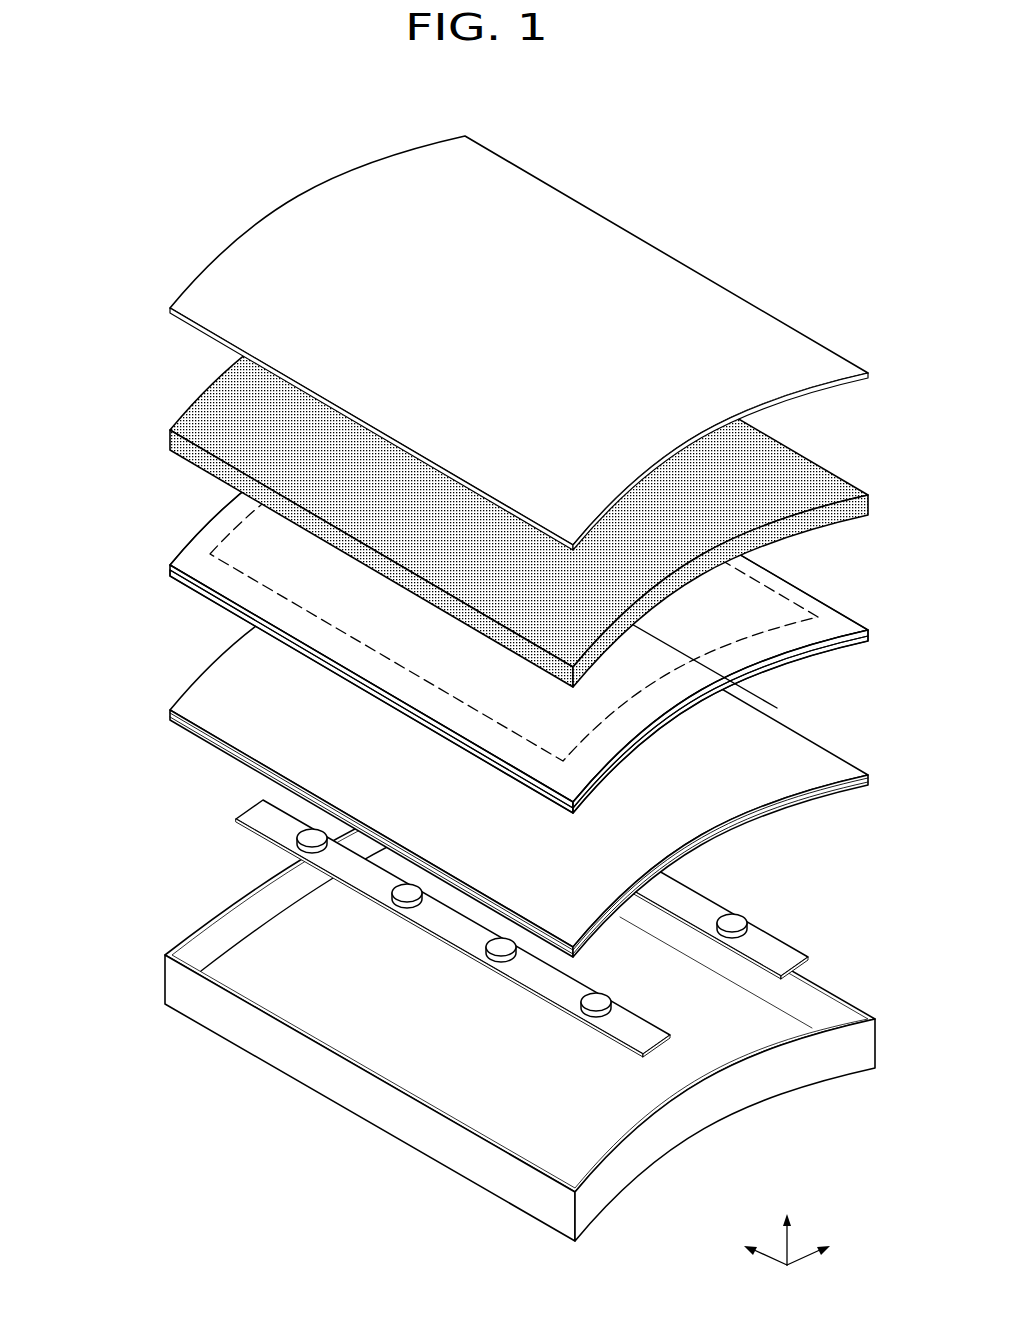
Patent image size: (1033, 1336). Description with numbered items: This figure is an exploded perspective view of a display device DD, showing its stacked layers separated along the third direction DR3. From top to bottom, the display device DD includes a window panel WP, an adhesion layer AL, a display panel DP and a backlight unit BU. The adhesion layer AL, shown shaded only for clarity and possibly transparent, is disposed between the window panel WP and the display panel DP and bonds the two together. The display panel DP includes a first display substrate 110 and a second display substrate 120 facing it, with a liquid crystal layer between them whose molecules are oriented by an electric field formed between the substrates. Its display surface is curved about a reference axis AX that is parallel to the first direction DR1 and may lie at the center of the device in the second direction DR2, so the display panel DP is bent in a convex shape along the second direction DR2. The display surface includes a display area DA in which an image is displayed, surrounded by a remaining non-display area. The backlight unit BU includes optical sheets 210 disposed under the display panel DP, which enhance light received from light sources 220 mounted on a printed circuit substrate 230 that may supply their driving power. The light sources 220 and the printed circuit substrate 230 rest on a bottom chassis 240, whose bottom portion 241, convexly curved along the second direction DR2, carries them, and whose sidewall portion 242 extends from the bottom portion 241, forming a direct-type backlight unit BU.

The display device DD is at (463, 679).
The window panel WP is at (170, 310).
The adhesion layer AL is at (170, 432).
The display panel DP is at (463, 603).
The second display substrate 120 is at (170, 566).
The first display substrate 110 is at (170, 574).
The display area DA is at (759, 609).
The reference axis AX is at (760, 697).
The backlight unit BU is at (454, 889).
The optical sheets 210 is at (78, 894).
The light sources 220 is at (303, 830).
The printed circuit substrate 230 is at (263, 818).
The bottom chassis 240 is at (477, 1011).
The bottom portion 241 is at (303, 923).
The sidewall portion 242 is at (240, 921).
The first direction DR1 is at (745, 1250).
The second direction DR2 is at (829, 1250).
The third direction DR3 is at (789, 1226).